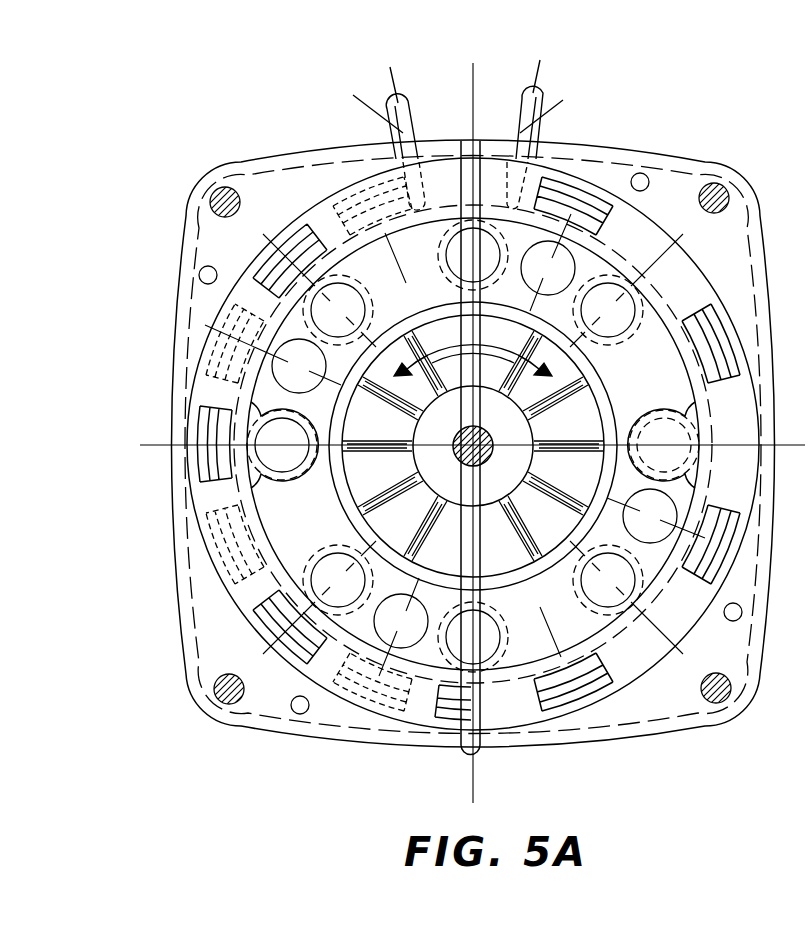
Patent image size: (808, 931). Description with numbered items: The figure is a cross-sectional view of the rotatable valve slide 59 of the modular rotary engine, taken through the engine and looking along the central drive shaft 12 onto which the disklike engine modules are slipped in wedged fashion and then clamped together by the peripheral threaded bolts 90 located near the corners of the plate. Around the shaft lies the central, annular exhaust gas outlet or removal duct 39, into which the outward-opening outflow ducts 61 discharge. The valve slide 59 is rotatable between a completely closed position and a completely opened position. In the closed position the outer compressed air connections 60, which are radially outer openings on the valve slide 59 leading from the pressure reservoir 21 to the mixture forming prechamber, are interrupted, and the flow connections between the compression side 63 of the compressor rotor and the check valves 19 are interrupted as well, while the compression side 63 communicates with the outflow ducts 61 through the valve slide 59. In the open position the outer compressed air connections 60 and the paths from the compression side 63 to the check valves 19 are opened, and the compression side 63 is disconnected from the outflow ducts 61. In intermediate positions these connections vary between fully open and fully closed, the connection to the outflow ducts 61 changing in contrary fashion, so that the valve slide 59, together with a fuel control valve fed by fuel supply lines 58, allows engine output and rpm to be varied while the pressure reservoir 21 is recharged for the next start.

The central drive shaft 12 is at (486, 428).
The check valves 19 is at (697, 277).
The pressure reservoir 21 is at (302, 195).
The exhaust gas outlet or removal duct 39 is at (410, 423).
The fuel supply lines 58 is at (199, 275).
The valve slide 59 is at (408, 113).
The outer compressed air connections 60 is at (268, 242).
The outflow ducts 61 is at (453, 215).
The compression side 63 is at (305, 578).
The peripheral threaded bolts 90 is at (222, 196).